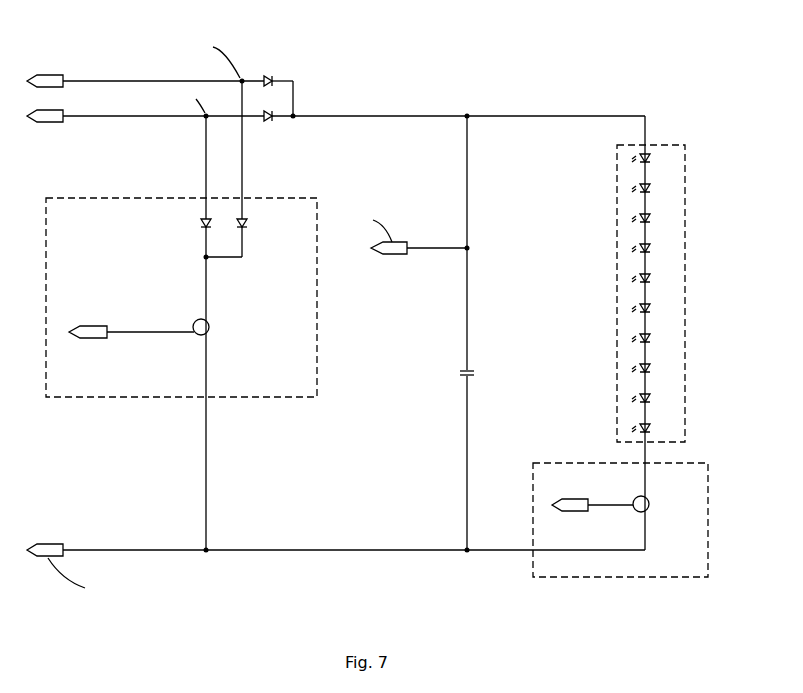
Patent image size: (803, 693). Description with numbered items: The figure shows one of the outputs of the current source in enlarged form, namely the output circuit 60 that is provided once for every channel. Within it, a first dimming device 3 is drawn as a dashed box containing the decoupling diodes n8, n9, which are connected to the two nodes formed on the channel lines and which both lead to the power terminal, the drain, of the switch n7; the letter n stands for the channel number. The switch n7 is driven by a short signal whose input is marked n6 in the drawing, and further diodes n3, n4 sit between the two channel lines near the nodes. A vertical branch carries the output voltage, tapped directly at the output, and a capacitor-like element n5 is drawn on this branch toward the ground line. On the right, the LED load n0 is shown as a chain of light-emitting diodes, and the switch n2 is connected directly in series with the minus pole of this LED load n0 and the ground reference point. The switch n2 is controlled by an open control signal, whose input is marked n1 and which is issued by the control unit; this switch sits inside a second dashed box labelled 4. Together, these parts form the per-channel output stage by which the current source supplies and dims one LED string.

The output circuit 60 is at (760, 38).
The first dimming device 3 is at (318, 189).
The open detection unit 4 is at (710, 454).
The LED load n0 is at (684, 141).
The open signal output n1 is at (558, 498).
The switch n2 is at (637, 496).
The diode n3 is at (271, 77).
The diode n4 is at (271, 120).
The capacitor n5 is at (475, 373).
The short signal output n6 is at (78, 340).
The switch n7 is at (210, 331).
The decoupling diode n8 is at (246, 224).
The decoupling diode n9 is at (200, 224).